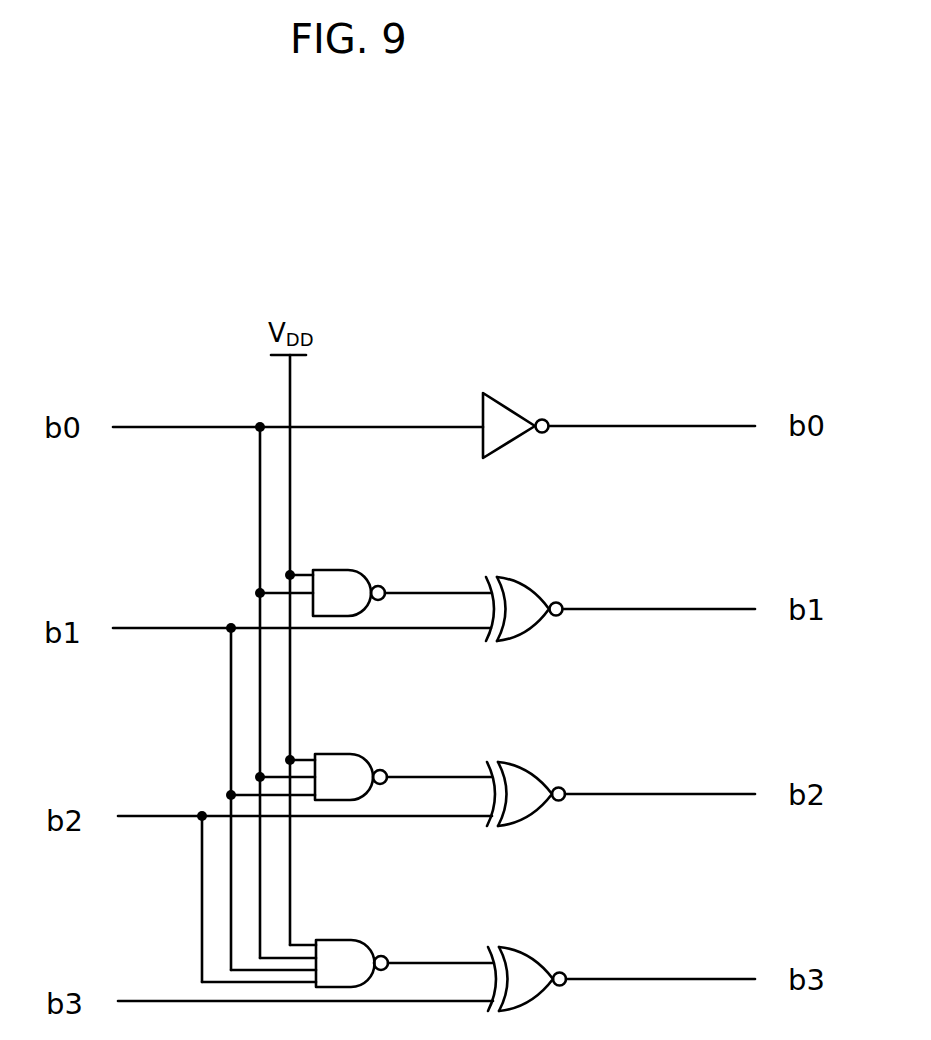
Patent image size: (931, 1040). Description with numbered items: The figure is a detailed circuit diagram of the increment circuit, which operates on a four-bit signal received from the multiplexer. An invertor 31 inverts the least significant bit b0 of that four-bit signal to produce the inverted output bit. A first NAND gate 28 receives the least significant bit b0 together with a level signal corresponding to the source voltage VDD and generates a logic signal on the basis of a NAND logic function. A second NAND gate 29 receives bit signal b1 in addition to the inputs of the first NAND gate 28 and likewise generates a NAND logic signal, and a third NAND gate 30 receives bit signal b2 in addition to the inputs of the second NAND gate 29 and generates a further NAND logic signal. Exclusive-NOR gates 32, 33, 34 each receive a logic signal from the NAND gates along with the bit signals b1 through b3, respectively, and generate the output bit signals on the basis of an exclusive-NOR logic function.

The first NAND gate 28 is at (352, 570).
The second NAND gate 29 is at (354, 754).
The third NAND gate 30 is at (356, 939).
The invertor 31 is at (508, 408).
The exclusive-NOR gate 32 is at (528, 586).
The exclusive-NOR gate 33 is at (528, 770).
The exclusive-NOR gate 34 is at (532, 956).